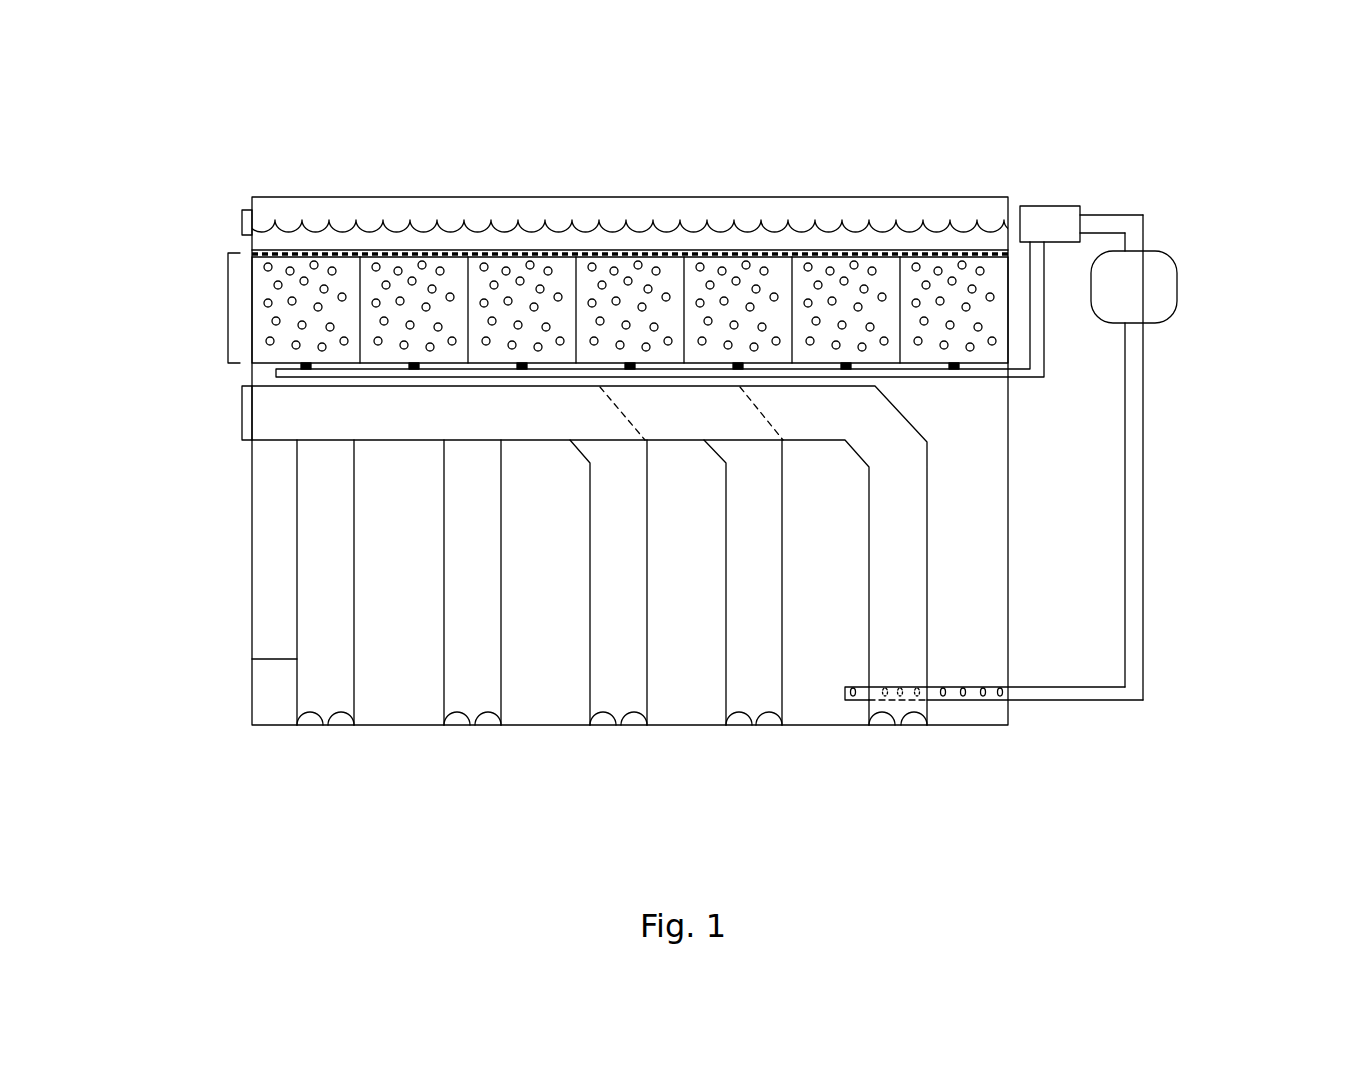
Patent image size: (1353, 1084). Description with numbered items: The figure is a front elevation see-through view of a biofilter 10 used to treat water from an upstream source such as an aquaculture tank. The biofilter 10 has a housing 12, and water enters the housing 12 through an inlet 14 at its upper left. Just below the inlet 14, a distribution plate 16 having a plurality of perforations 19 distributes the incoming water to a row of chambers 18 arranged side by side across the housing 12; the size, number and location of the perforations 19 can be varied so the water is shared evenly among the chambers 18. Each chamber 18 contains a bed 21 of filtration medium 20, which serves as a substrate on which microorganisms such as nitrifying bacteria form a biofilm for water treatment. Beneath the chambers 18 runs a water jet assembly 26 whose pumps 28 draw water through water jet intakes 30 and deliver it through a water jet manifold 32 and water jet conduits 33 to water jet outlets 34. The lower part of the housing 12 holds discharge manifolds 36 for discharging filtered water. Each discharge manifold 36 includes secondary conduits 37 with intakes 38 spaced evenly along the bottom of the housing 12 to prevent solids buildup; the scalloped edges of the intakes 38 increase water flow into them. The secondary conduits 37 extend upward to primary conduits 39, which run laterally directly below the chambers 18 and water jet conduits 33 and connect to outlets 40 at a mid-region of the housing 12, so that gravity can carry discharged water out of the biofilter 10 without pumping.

The biofilter 10 is at (668, 152).
The housing 12 is at (855, 197).
The inlet 14 is at (242, 223).
The distribution plate 16 is at (318, 250).
The chambers 18 is at (683, 292).
The perforations 19 is at (457, 250).
The filtration medium 20 is at (539, 268).
The bed 21 is at (228, 300).
The water jet assembly 26 is at (1152, 519).
The pumps 28 is at (1177, 287).
The water jet intakes 30 is at (960, 700).
The water jet manifold 32 is at (1048, 206).
The water jet conduits 33 is at (918, 377).
The water jet outlets 34 is at (963, 370).
The discharge manifolds 36 is at (288, 585).
The secondary conduits 37 is at (250, 659).
The intakes 38 is at (648, 727).
The primary conduits 39 is at (268, 440).
The outlets 40 is at (247, 412).